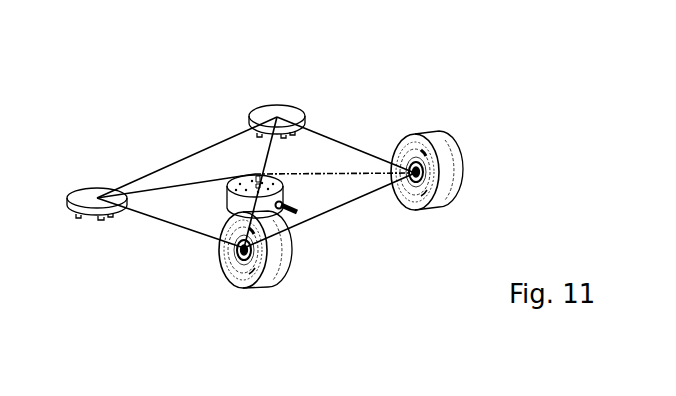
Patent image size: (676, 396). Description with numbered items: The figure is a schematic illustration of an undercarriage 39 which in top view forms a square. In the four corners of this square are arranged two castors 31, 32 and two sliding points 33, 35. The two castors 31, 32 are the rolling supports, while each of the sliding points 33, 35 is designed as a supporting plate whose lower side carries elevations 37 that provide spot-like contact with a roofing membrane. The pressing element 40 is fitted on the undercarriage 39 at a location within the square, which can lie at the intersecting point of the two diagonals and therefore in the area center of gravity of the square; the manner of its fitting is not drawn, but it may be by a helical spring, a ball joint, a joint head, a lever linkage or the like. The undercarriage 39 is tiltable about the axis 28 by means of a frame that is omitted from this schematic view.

The axis 28 is at (334, 214).
The castor 31 is at (229, 273).
The castor 32 is at (452, 157).
The sliding point 33 is at (88, 195).
The sliding point 35 is at (260, 113).
The elevations 37 is at (101, 223).
The undercarriage 39 is at (197, 146).
The pressing element 40 is at (281, 179).